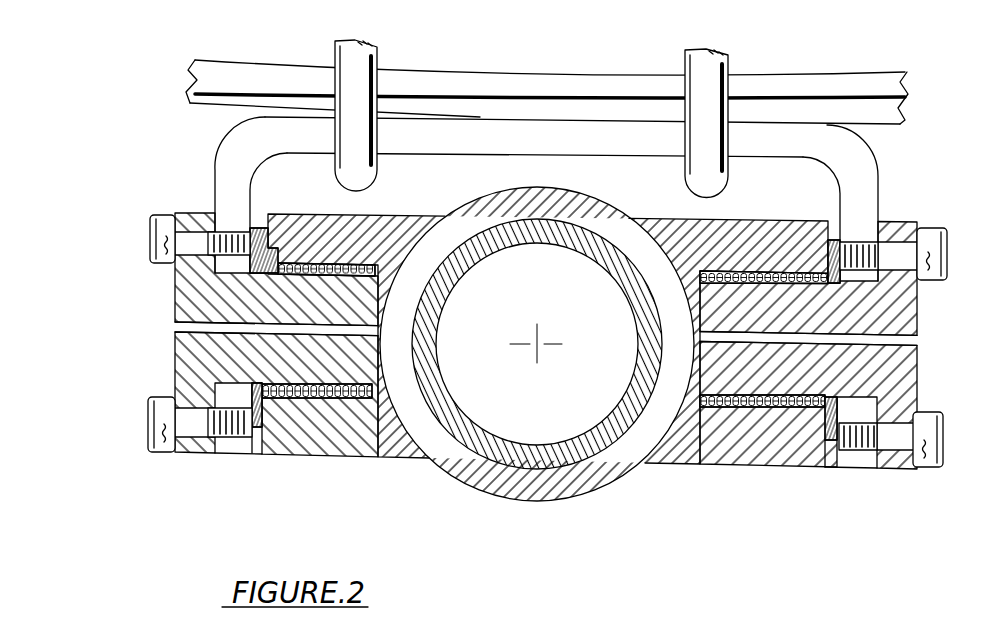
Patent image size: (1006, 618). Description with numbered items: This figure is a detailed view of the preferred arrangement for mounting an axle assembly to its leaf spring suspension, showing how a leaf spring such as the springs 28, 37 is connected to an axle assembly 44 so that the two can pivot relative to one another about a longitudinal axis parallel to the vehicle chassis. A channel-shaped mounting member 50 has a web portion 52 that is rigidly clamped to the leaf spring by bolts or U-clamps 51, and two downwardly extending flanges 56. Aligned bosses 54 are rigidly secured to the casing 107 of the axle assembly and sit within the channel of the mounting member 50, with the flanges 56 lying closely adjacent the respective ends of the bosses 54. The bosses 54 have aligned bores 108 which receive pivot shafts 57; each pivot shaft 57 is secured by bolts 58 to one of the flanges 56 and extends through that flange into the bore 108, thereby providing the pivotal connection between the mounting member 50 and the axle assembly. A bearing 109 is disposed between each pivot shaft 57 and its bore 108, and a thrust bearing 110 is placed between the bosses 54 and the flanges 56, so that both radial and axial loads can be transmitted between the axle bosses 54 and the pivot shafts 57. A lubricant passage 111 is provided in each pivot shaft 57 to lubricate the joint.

The leaf spring 28 is at (600, 90).
The leaf spring 37 is at (622, 112).
The axle assembly 44 is at (604, 86).
The mounting member 50 is at (881, 156).
The U-clamps 51 is at (355, 73).
The web portion 52 is at (537, 135).
The bosses 54 is at (362, 447).
The flanges 56 is at (868, 207).
The pivot shafts 57 is at (223, 357).
The bolts 58 is at (148, 261).
The casing 107 is at (598, 448).
The bores 108 is at (383, 387).
The bearing 109 is at (303, 405).
The thrust bearing 110 is at (253, 455).
The lubricant passage 111 is at (175, 327).